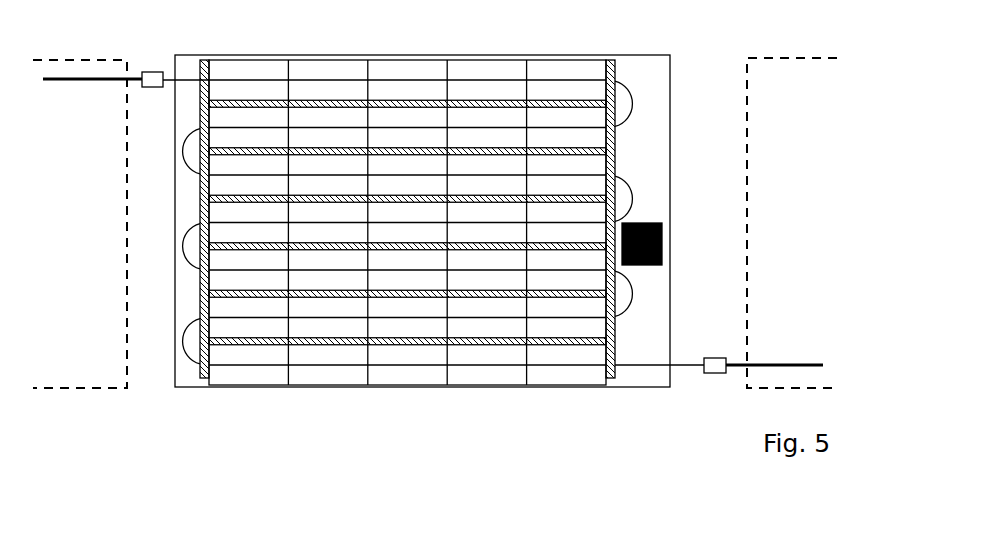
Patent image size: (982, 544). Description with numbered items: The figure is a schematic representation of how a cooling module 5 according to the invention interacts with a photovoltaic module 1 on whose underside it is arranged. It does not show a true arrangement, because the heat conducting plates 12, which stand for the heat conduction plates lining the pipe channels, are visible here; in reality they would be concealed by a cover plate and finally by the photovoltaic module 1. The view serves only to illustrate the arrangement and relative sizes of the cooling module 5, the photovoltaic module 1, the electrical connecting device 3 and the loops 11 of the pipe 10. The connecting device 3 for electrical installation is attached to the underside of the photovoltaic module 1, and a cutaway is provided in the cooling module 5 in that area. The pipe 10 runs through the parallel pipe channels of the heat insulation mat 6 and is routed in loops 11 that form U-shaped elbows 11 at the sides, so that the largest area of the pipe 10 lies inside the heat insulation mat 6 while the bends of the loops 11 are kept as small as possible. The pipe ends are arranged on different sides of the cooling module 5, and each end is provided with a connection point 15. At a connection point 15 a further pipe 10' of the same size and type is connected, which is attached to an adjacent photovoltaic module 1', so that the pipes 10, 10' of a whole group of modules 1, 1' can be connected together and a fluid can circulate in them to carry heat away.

The photovoltaic module 1 is at (446, 210).
The adjacent photovoltaic module 1' is at (435, 223).
The connecting device 3 is at (660, 245).
The cooling module 5 is at (313, 372).
The heat insulation mat 6 is at (203, 293).
The pipe 10 is at (408, 224).
The further pipe 10' is at (436, 188).
The loops 11 is at (632, 104).
The heat conducting plates 12 is at (592, 137).
The connection point 15 is at (147, 72).